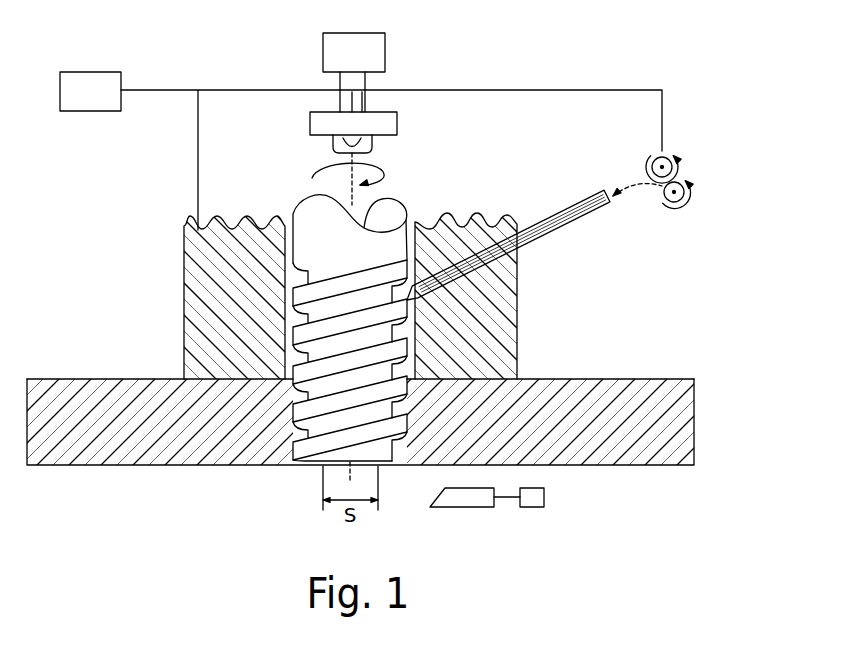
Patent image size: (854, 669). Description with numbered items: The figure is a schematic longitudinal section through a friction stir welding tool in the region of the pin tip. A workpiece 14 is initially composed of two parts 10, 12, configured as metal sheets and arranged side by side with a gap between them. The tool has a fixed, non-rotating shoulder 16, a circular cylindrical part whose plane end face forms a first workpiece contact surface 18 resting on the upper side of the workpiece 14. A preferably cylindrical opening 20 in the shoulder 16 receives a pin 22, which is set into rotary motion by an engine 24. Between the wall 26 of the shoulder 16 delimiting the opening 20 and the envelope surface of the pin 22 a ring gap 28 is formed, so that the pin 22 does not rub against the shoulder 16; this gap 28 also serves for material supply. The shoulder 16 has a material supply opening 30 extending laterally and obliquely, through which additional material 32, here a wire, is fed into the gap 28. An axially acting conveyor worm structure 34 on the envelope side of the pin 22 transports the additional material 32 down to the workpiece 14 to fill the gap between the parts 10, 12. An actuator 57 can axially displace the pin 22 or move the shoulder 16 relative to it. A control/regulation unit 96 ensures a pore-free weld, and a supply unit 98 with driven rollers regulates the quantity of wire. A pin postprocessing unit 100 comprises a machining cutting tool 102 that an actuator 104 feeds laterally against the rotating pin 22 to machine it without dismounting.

The part 10 is at (97, 440).
The part 12 is at (630, 455).
The workpiece 14 is at (624, 408).
The shoulder 16 is at (492, 328).
The first workpiece contact surface 18 is at (178, 448).
The opening 20 is at (488, 237).
The pin 22 is at (195, 310).
The engine 24 is at (382, 120).
The wall 26 is at (412, 214).
The gap 28 is at (290, 228).
The material supply opening 30 is at (494, 282).
The additional material 32 is at (572, 208).
The conveyor worm structure 34 is at (425, 347).
The actuator 57 is at (363, 48).
The control/regulation unit 96 is at (89, 92).
The supply unit 98 is at (667, 152).
The pin postprocessing unit 100 is at (503, 538).
The machining cutting tool 102 is at (472, 500).
The actuator 104 is at (535, 503).